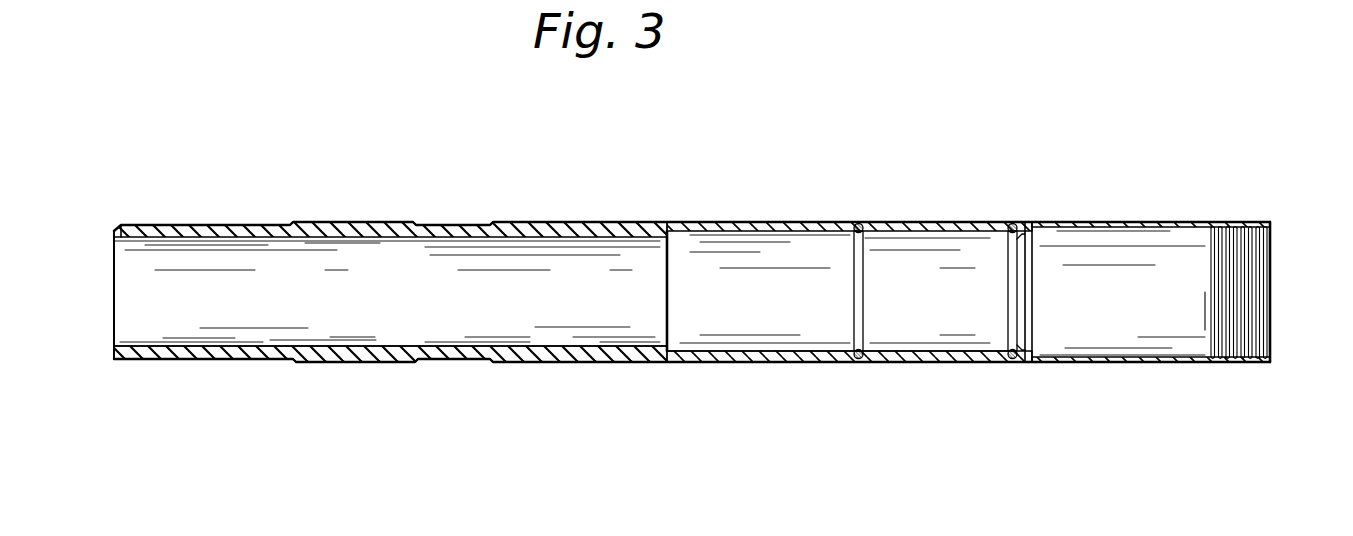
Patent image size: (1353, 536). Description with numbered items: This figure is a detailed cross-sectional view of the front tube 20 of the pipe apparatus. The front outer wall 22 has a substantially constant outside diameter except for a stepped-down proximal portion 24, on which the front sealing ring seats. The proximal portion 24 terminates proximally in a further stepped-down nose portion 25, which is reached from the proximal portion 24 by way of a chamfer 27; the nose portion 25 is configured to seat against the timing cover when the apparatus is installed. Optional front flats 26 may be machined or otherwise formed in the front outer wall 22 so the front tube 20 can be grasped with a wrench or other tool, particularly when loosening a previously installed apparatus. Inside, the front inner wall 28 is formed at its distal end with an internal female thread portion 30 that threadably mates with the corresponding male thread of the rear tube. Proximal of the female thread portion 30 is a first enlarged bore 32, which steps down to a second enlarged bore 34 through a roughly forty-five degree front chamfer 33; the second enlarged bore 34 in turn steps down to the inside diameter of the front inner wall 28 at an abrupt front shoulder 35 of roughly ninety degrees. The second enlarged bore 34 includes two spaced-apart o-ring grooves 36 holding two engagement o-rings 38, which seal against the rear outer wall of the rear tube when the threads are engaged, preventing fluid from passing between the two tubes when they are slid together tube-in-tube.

The front tube 20 is at (757, 112).
The front outer wall 22 is at (950, 222).
The stepped-down proximal portion 24 is at (214, 226).
The stepped-down nose portion 25 is at (122, 228).
The front flats 26 is at (452, 224).
The chamfer 27 is at (127, 226).
The front inner wall 28 is at (302, 346).
The female thread portion 30 is at (1262, 292).
The first enlarged bore 32 is at (1148, 357).
The front chamfer 33 is at (1028, 351).
The second enlarged bore 34 is at (740, 353).
The front shoulder 35 is at (670, 231).
The o-ring grooves 36 is at (855, 322).
The engagement o-rings 38 is at (857, 224).